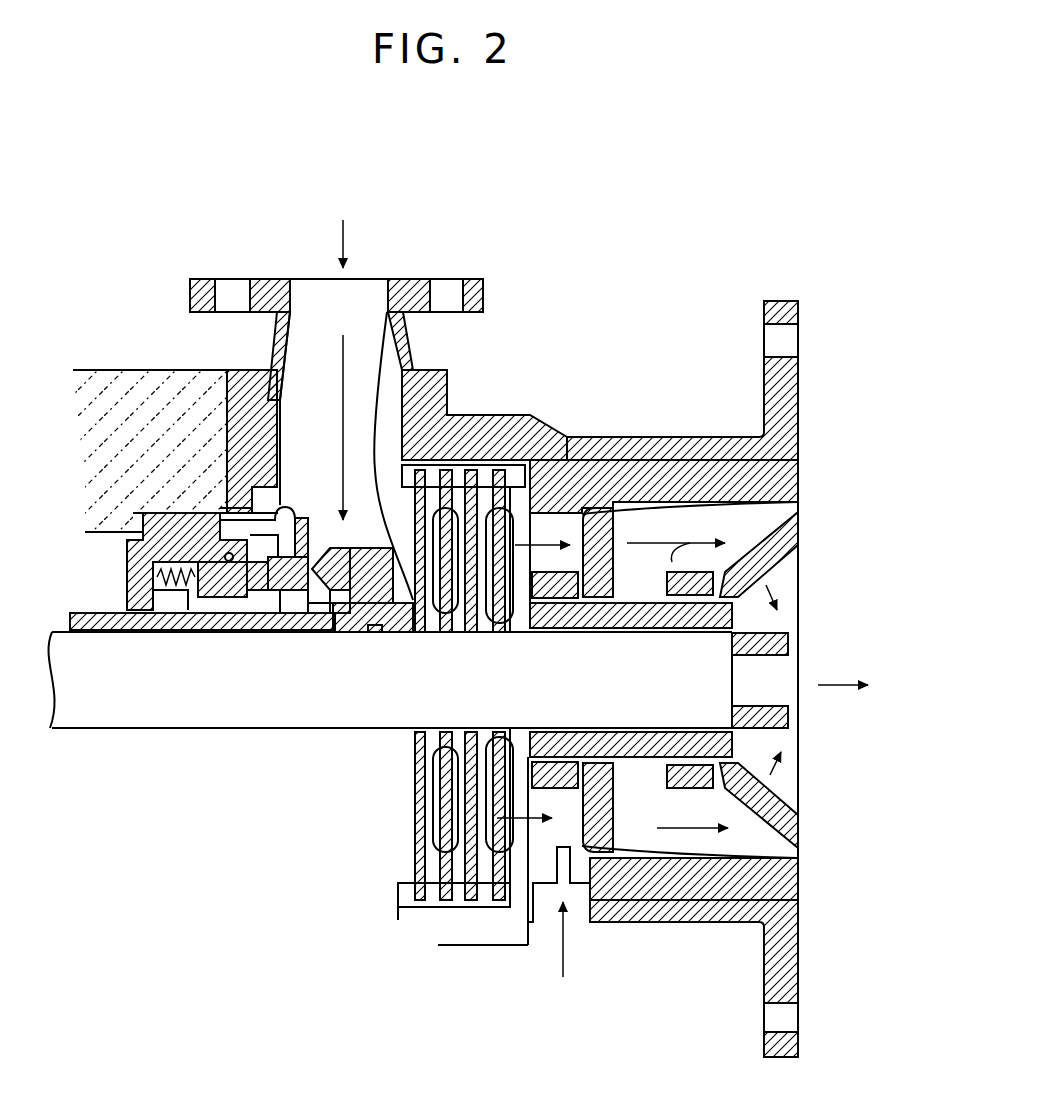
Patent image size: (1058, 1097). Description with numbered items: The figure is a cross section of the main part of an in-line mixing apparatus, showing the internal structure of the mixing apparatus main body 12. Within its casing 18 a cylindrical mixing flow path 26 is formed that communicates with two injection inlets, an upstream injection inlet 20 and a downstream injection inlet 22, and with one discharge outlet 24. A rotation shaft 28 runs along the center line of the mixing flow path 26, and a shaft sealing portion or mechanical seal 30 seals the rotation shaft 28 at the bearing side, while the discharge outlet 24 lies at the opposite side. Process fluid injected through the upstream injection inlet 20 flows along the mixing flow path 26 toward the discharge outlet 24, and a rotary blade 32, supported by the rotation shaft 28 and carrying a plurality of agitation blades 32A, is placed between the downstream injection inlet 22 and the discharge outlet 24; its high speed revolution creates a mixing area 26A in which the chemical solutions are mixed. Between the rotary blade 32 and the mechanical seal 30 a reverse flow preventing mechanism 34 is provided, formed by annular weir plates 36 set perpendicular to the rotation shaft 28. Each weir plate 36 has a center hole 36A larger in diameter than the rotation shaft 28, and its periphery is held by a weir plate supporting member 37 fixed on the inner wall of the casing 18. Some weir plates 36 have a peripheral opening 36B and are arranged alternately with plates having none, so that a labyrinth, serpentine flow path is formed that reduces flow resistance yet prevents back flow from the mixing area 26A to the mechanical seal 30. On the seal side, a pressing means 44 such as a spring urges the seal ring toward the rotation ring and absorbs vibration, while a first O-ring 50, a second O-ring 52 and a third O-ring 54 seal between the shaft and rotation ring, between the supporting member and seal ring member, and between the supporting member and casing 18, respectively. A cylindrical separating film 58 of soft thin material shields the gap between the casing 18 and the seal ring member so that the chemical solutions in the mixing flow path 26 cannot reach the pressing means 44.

The mixing apparatus main body 12 is at (745, 296).
The casing 18 is at (118, 412).
The upstream injection inlet 20 is at (368, 292).
The downstream injection inlet 22 is at (550, 905).
The discharge outlet 24 is at (775, 680).
The mixing flow path 26 is at (517, 606).
The mixing area 26A is at (800, 506).
The rotation shaft 28 is at (130, 710).
The mechanical seal 30 is at (342, 516).
The rotary blade 32 is at (638, 568).
The agitation blades 32A is at (598, 525).
The reverse flow preventing mechanism 34 is at (452, 626).
The weir plate 36 is at (487, 884).
The center hole 36A is at (440, 754).
The opening 36B is at (493, 838).
The weir plate supporting member 37 is at (486, 470).
The pressing means 44 is at (172, 592).
The first O-ring 50 is at (376, 631).
The second O-ring 52 is at (231, 566).
The third O-ring 54 is at (220, 510).
The separating film 58 is at (288, 504).